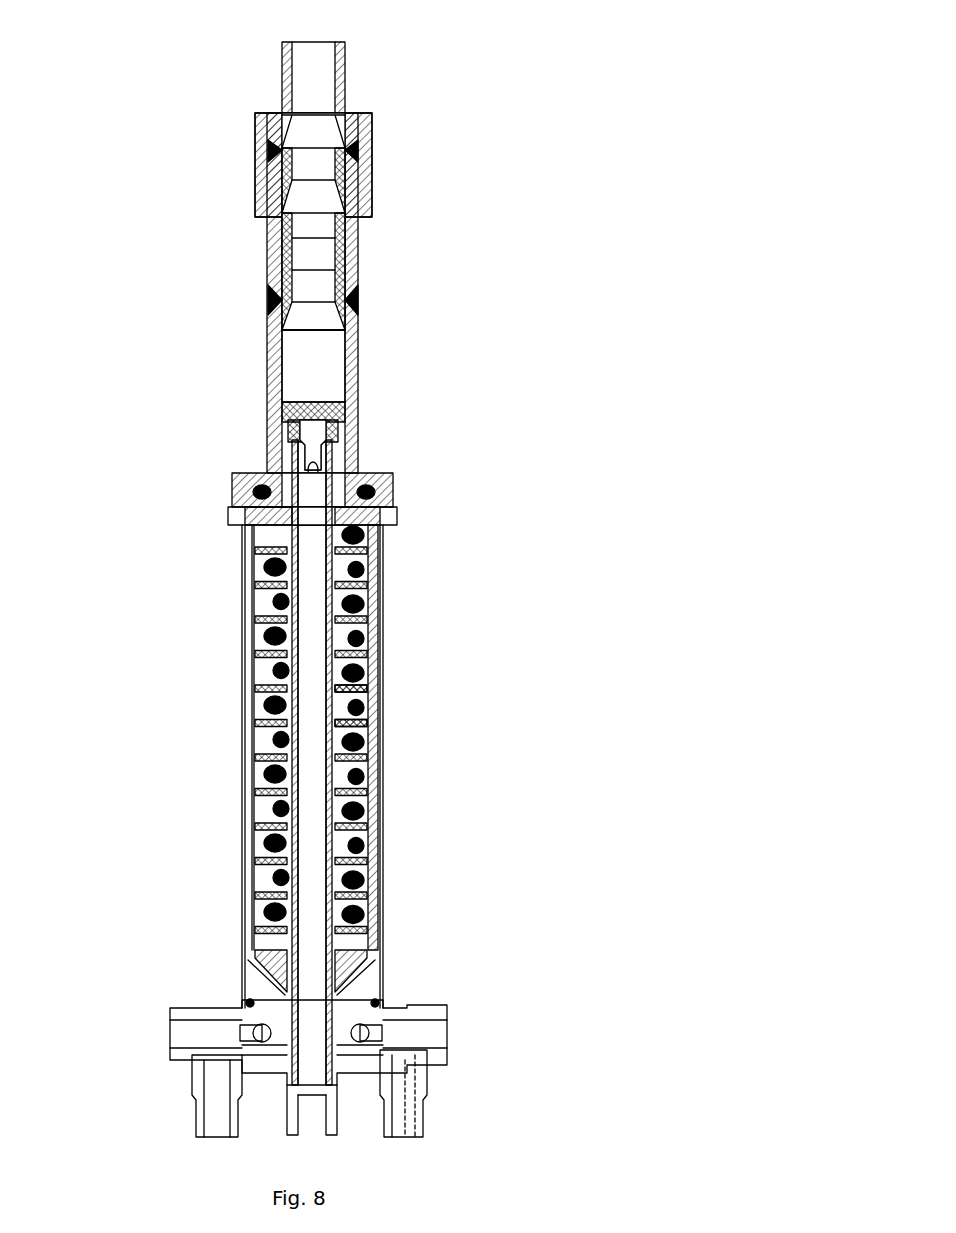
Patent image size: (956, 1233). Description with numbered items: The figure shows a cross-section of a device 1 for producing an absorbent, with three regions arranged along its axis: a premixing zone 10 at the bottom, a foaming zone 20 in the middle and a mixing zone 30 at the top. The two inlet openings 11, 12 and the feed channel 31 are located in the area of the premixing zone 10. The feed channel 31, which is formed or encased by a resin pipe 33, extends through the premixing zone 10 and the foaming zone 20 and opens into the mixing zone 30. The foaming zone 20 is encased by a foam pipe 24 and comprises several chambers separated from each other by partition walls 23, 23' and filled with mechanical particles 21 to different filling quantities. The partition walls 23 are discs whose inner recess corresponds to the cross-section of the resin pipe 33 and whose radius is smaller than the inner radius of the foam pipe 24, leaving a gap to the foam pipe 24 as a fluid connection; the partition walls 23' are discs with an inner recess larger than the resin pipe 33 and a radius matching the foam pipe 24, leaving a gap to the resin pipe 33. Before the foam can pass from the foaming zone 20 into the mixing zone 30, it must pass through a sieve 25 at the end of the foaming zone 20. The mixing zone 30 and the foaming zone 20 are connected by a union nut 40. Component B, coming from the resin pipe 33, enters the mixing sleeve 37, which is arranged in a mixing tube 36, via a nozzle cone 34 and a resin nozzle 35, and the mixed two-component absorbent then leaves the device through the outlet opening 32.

The device 1 is at (627, 68).
The premixing zone 10 is at (481, 977).
The inlet opening 11 is at (224, 1104).
The inlet opening 12 is at (410, 1108).
The foaming zone 20 is at (530, 526).
The mechanical particles 21 is at (272, 879).
The partition walls 23 is at (355, 739).
The partition walls 23' is at (397, 680).
The foam pipe 24 is at (247, 812).
The sieve 25 is at (277, 523).
The mixing zone 30 is at (420, 110).
The feed channel 31 is at (310, 1126).
The outlet opening 32 is at (309, 40).
The resin pipe 33 is at (316, 683).
The nozzle cone 34 is at (302, 452).
The resin nozzle 35 is at (300, 415).
The mixing tube 36 is at (275, 130).
The mixing sleeve 37 is at (302, 253).
The union nut 40 is at (236, 485).